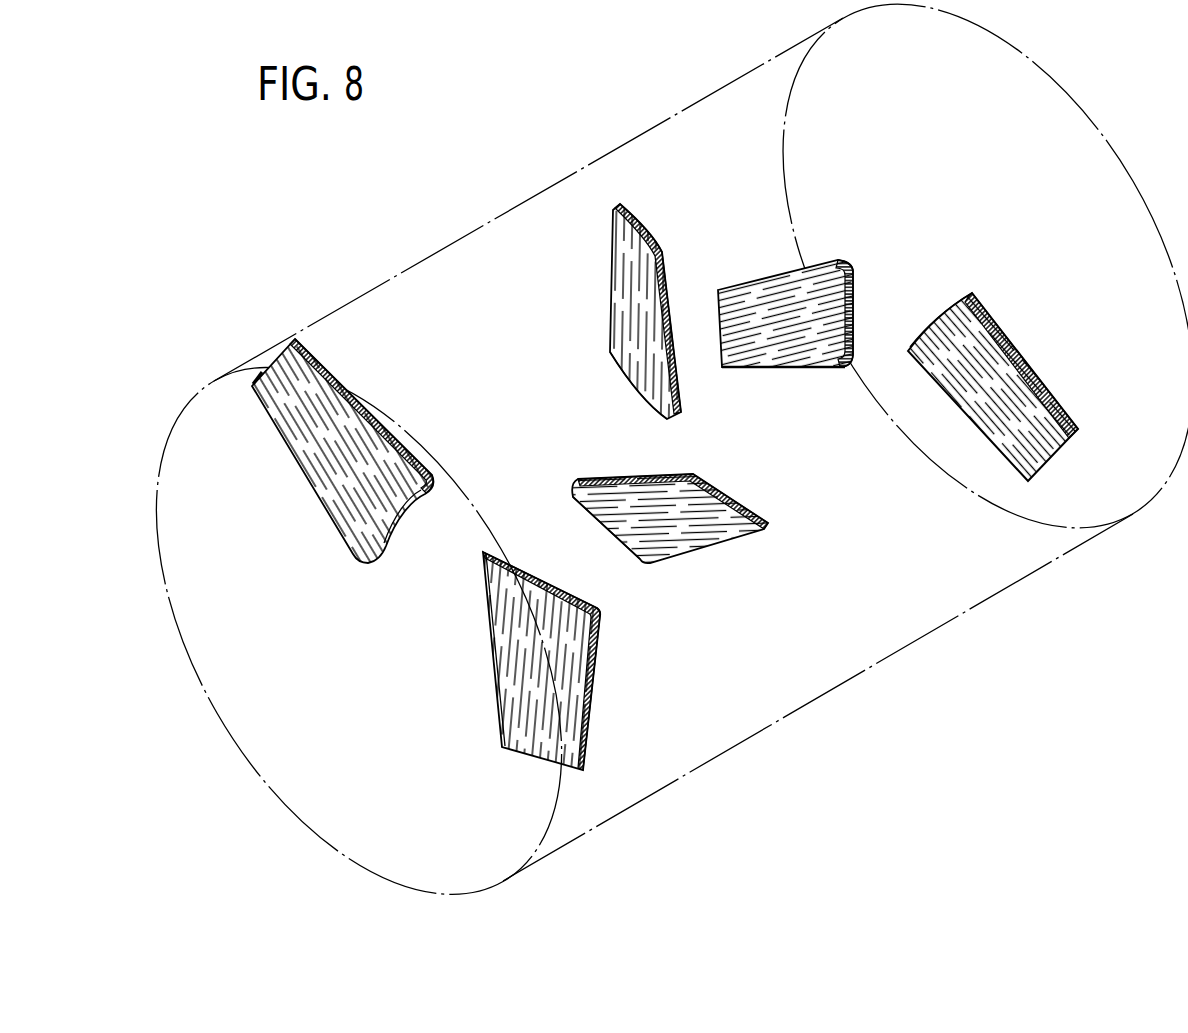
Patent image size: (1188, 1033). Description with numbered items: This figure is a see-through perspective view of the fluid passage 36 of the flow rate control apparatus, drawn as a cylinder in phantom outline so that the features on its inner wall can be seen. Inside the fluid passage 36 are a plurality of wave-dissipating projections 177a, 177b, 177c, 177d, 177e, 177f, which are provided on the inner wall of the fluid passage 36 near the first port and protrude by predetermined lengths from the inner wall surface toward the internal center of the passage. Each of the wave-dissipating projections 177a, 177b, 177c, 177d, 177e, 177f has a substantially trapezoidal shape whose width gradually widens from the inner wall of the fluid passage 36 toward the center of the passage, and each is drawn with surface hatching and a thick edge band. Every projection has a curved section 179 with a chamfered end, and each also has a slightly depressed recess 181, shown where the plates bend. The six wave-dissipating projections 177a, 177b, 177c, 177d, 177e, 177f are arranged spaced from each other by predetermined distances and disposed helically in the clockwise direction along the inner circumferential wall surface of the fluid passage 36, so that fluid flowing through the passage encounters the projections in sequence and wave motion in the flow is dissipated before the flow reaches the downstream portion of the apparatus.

The fluid passage 36 is at (265, 735).
The wave-dissipating projection 177a is at (335, 494).
The wave-dissipating projection 177b is at (523, 690).
The wave-dissipating projection 177c is at (679, 540).
The wave-dissipating projection 177d is at (630, 320).
The wave-dissipating projection 177e is at (792, 340).
The wave-dissipating projection 177f is at (1021, 390).
The curved section 179 is at (368, 567).
The recess 181 is at (392, 522).